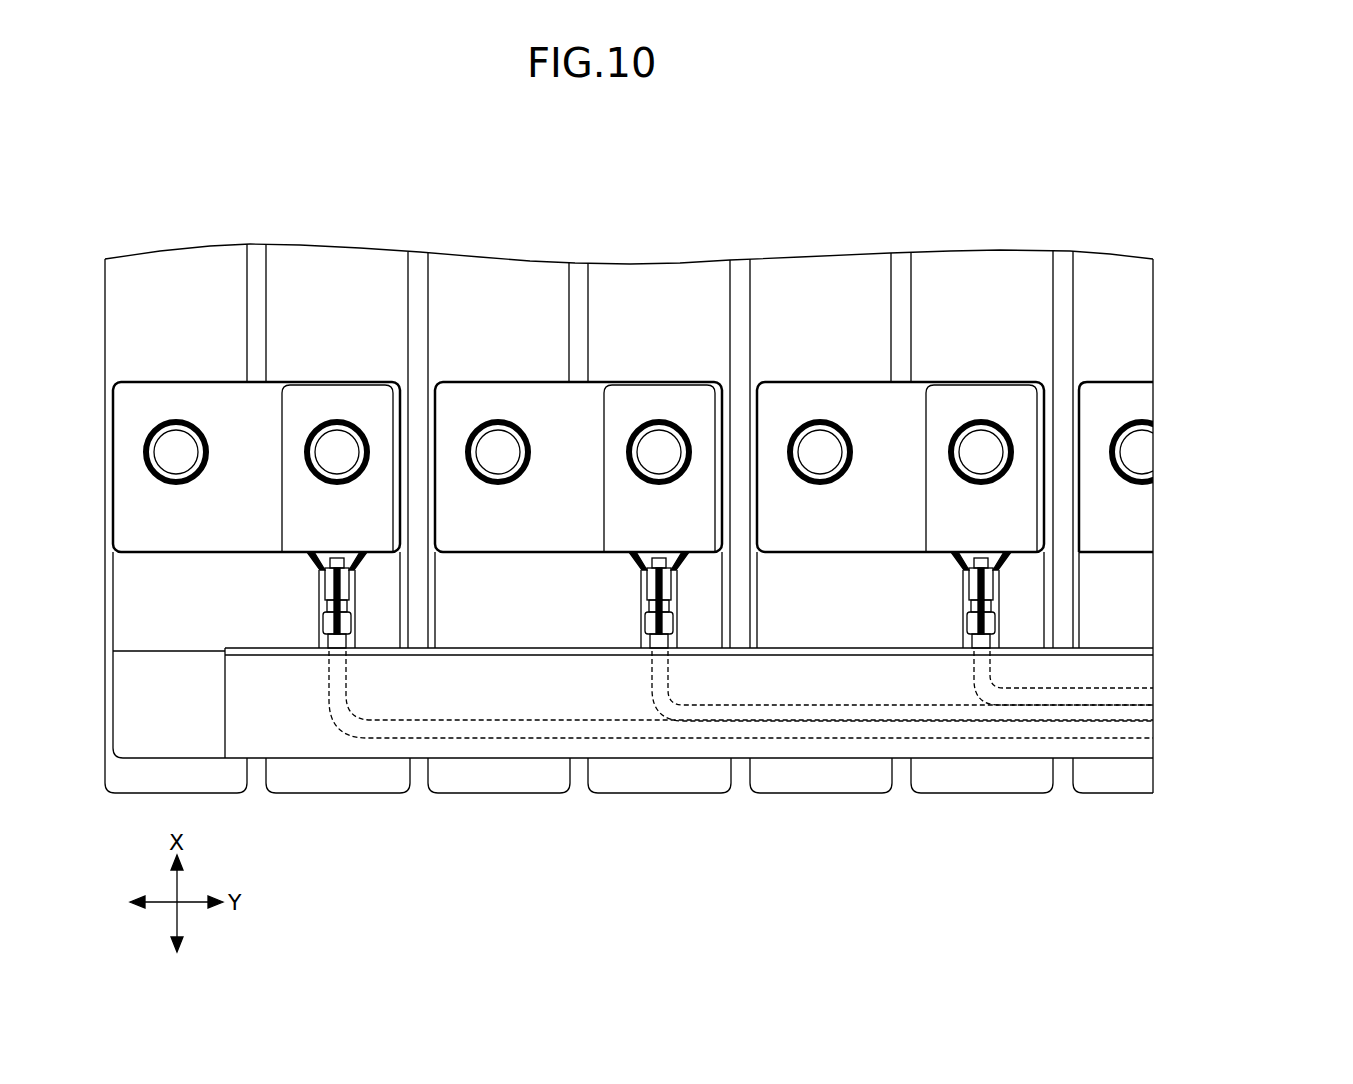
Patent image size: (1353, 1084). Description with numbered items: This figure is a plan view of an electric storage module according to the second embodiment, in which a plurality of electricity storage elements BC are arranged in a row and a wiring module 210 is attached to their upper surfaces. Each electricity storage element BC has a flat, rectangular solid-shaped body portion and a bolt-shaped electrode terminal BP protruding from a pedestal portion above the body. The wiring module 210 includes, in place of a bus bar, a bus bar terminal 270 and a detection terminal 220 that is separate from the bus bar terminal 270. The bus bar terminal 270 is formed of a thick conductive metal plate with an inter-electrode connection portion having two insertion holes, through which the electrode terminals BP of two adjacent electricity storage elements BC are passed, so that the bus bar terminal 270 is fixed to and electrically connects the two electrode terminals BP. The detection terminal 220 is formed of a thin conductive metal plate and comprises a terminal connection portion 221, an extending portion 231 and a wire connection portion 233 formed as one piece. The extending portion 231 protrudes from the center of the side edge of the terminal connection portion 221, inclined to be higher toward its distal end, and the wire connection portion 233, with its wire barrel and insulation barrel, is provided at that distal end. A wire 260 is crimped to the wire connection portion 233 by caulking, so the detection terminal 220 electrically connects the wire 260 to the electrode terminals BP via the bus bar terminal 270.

The wiring module 210 is at (1191, 762).
The detection terminal 220 is at (1033, 422).
The terminal connection portion 221 is at (1004, 370).
The extending portion 231 is at (998, 557).
The wire connection portion 233 is at (992, 588).
The wire 260 is at (1008, 727).
The bus bar terminal 270 is at (886, 512).
The electrode terminal BP is at (980, 445).
The electricity storage element BC is at (865, 277).